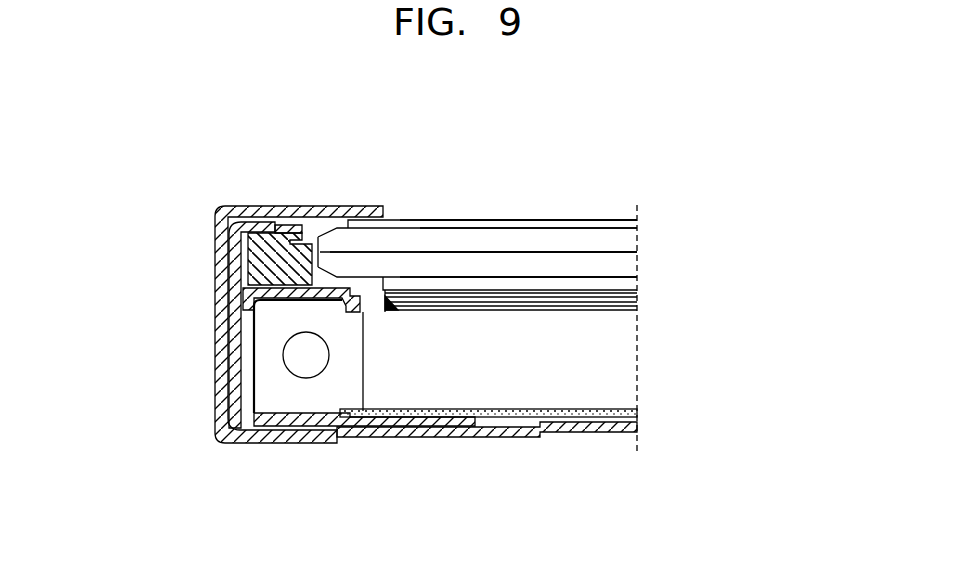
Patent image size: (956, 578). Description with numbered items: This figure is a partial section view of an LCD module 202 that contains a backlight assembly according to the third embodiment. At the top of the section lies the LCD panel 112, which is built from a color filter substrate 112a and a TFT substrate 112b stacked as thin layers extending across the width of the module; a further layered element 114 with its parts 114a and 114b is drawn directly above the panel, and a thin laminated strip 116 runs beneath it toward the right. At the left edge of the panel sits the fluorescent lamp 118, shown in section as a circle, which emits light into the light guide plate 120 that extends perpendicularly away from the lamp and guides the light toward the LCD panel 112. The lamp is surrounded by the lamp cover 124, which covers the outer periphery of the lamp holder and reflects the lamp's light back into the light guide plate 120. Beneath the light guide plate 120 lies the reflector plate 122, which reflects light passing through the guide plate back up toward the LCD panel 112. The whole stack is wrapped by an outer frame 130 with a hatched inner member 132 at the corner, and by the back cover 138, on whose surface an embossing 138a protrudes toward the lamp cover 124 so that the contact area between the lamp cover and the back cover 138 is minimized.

The LCD module 202 is at (537, 200).
The frame 130 is at (213, 216).
The frame inner member 132 is at (262, 256).
The back cover 138 is at (250, 300).
The embossing 138a is at (347, 440).
The lamp cover 124 is at (252, 332).
The light guide plate 120 is at (630, 368).
The fluorescent lamp 118 is at (284, 361).
The cover plate 114 is at (497, 120).
The first cover plate 114a is at (412, 220).
The second cover plate 114b is at (444, 290).
The LCD panel 112 is at (775, 222).
The color filter substrate 112a is at (630, 240).
The TFT substrate 112b is at (630, 275).
The laminated layer 116 is at (636, 292).
The reflector plate 122 is at (633, 409).